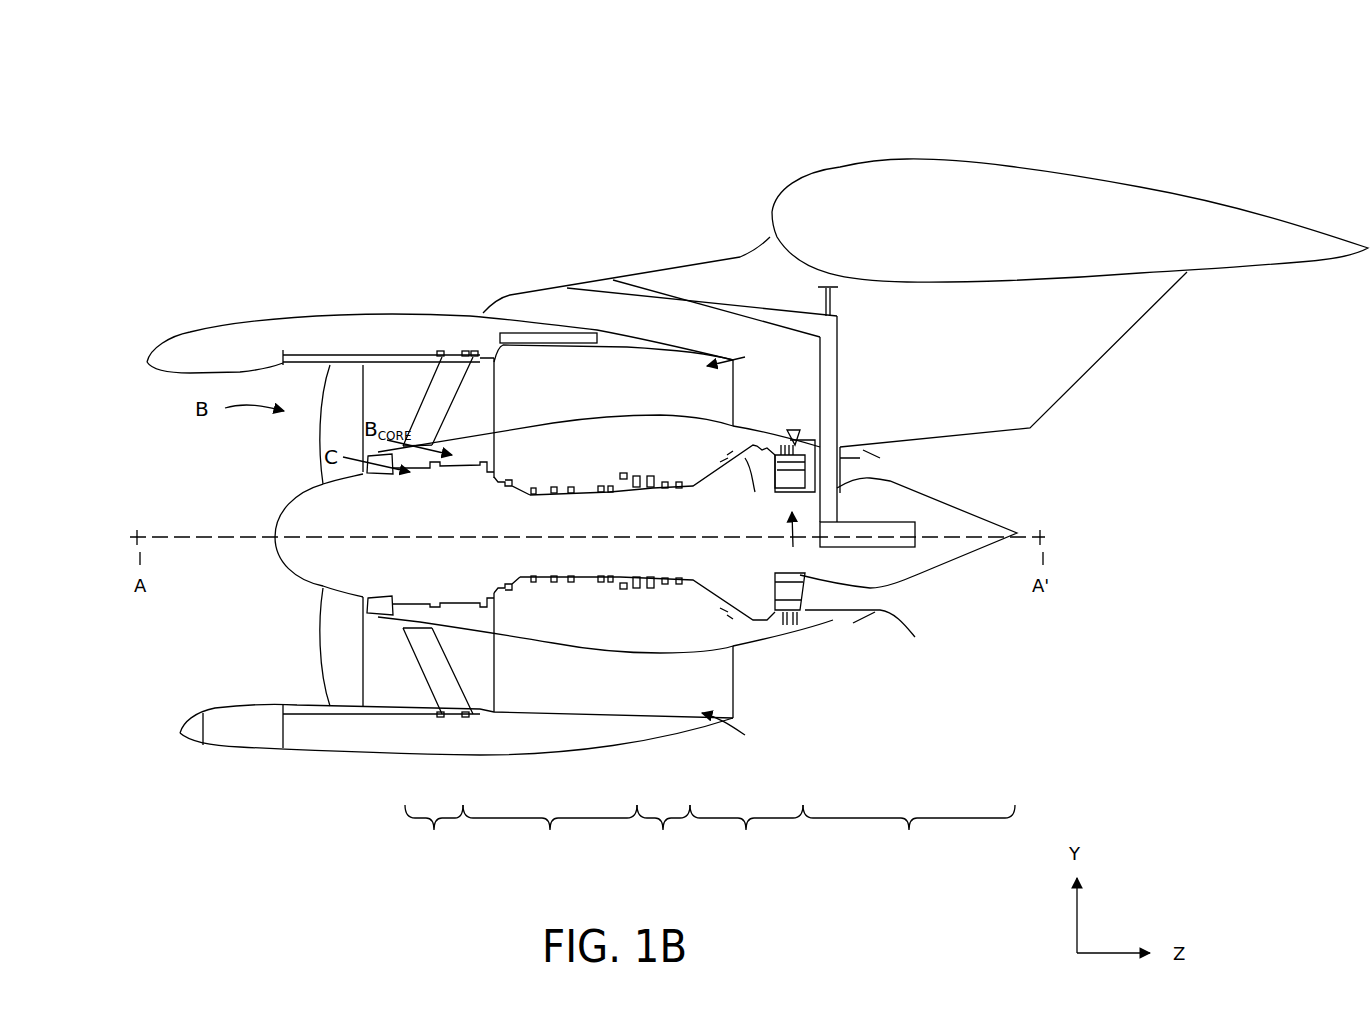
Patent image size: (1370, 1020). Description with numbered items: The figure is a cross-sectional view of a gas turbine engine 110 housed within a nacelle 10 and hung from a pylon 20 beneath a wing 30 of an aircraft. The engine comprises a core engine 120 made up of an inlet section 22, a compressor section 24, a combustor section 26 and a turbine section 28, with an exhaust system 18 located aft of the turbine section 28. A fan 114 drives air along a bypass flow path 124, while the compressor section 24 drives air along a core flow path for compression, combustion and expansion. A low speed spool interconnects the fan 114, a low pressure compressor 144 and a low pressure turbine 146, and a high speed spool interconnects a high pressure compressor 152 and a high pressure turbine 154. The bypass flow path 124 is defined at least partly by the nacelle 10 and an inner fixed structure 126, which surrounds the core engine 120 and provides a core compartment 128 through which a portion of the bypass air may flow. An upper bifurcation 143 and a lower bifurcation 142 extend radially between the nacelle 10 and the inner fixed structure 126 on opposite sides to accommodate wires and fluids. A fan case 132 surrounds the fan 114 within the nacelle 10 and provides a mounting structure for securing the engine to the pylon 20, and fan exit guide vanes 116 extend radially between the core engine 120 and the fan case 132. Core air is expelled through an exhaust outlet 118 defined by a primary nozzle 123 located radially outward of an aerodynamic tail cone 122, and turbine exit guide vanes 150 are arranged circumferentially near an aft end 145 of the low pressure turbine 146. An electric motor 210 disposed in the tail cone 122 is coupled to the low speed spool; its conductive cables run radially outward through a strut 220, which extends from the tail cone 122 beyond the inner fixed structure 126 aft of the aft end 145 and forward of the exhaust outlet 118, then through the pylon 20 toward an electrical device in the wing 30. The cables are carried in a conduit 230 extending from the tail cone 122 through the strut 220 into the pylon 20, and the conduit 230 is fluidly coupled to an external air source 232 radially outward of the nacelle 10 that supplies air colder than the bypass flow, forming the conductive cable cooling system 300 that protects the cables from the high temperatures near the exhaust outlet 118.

The conductive cable cooling system 300 is at (1128, 95).
The wing 30 is at (1070, 220).
The pylon 20 is at (835, 342).
The external air source 232 is at (586, 280).
The conduit 230 is at (827, 385).
The strut 220 is at (838, 452).
The electric motor 210 is at (867, 534).
The exhaust outlet 118 is at (877, 470).
The tail cone 122 is at (918, 568).
The primary nozzle 123 is at (878, 629).
The nacelle 10 is at (316, 308).
The fan case 132 is at (307, 717).
The bypass flow path 124 is at (613, 538).
The core compartment 128 is at (599, 532).
The inner fixed structure 126 is at (755, 641).
The gas turbine engine 110 is at (240, 520).
The fan 114 is at (325, 636).
The fan exit guide vanes 116 is at (437, 678).
The low pressure compressor 144 is at (490, 478).
The core engine 120 is at (627, 476).
The high pressure compressor 152 is at (557, 493).
The high pressure turbine 154 is at (670, 489).
The low pressure turbine 146 is at (745, 458).
The turbine exit guide vanes 150 is at (787, 592).
The aft end 145 is at (807, 539).
The upper bifurcation 143 is at (751, 354).
The lower bifurcation 142 is at (742, 729).
The inlet section 22 is at (434, 836).
The compressor section 24 is at (550, 836).
The combustor section 26 is at (663, 836).
The turbine section 28 is at (746, 836).
The exhaust system 18 is at (909, 836).